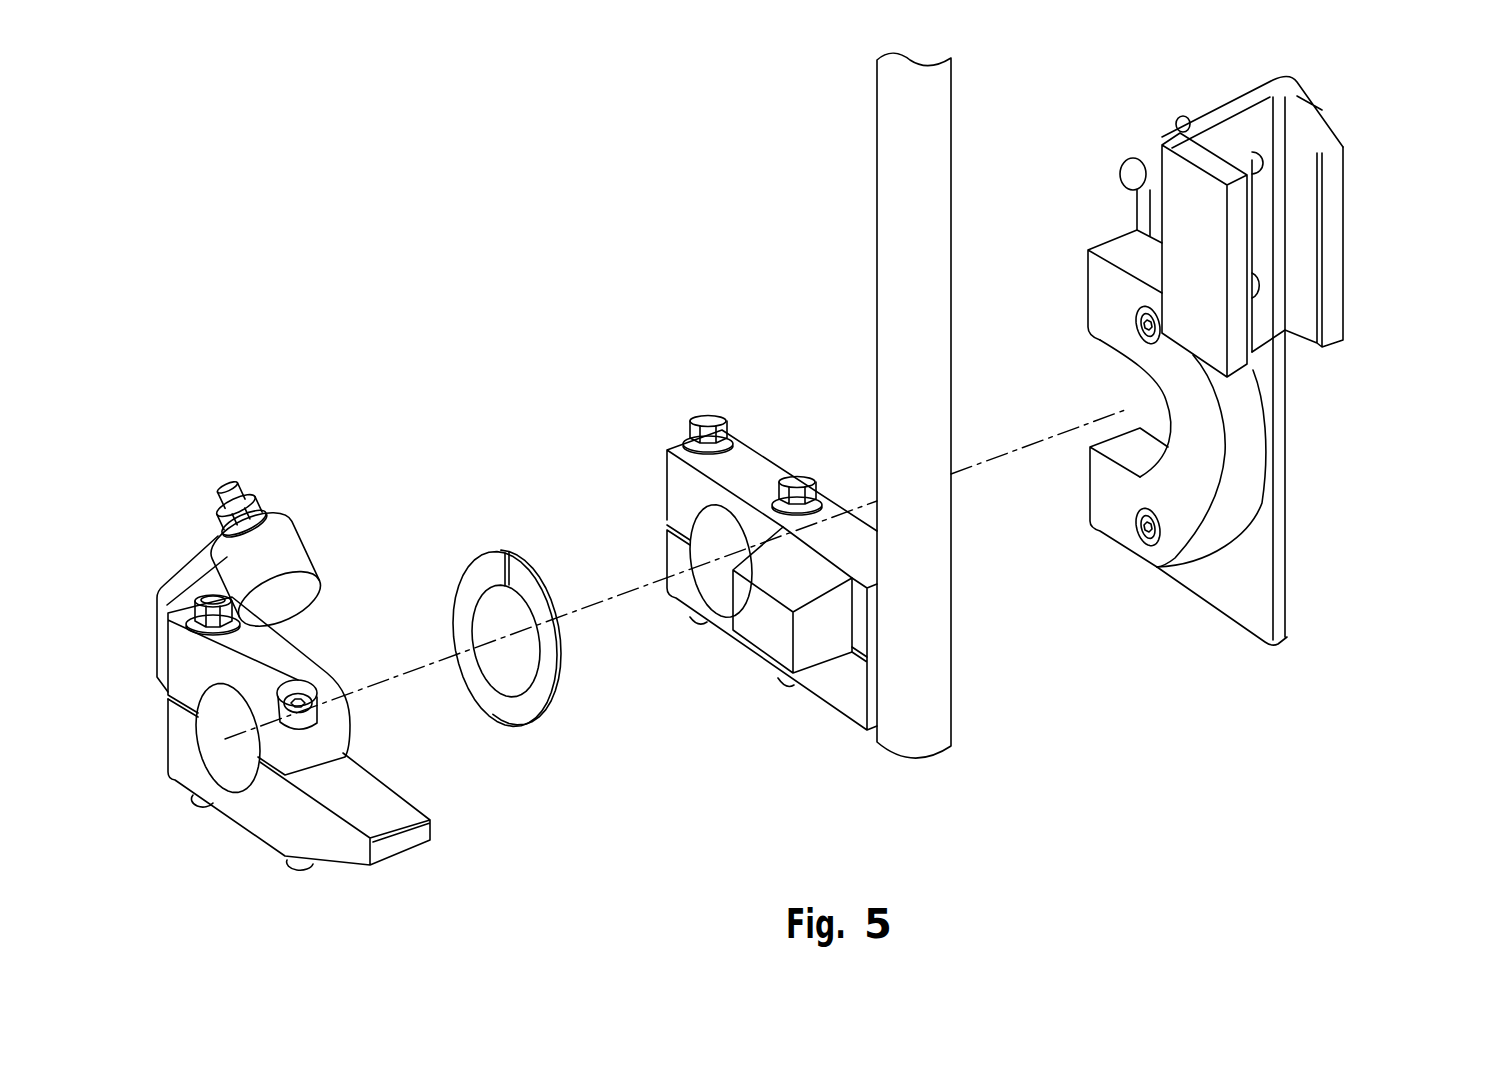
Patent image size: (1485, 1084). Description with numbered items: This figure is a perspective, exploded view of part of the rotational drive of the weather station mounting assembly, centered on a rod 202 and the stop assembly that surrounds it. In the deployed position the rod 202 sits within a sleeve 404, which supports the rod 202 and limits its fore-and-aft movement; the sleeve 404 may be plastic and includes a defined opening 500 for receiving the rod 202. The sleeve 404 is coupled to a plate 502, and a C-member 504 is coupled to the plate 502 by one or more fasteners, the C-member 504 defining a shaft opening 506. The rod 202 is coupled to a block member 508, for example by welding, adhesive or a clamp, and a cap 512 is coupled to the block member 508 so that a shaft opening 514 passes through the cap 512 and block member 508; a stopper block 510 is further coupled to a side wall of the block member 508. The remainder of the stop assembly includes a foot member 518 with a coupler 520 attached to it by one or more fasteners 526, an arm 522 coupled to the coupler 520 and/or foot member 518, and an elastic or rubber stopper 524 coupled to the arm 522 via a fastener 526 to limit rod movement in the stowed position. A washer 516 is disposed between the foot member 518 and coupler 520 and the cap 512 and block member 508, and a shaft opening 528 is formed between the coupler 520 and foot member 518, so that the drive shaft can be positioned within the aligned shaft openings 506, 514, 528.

The rod 202 is at (890, 173).
The sleeve 404 is at (1333, 249).
The defined opening 500 is at (1296, 356).
The plate 502 is at (1257, 587).
The C-member 504 is at (1115, 493).
The shaft opening 506 is at (1115, 398).
The block member 508 is at (840, 690).
The mounting block 510 is at (765, 628).
The cap 512 is at (750, 470).
The shaft opening 514 is at (722, 570).
The washer 516 is at (543, 697).
The foot member 518 is at (373, 806).
The coupler 520 is at (292, 667).
The arm 522 is at (183, 577).
The stopper 524 is at (283, 547).
The fastener 526 is at (257, 492).
The shaft opening 528 is at (232, 753).